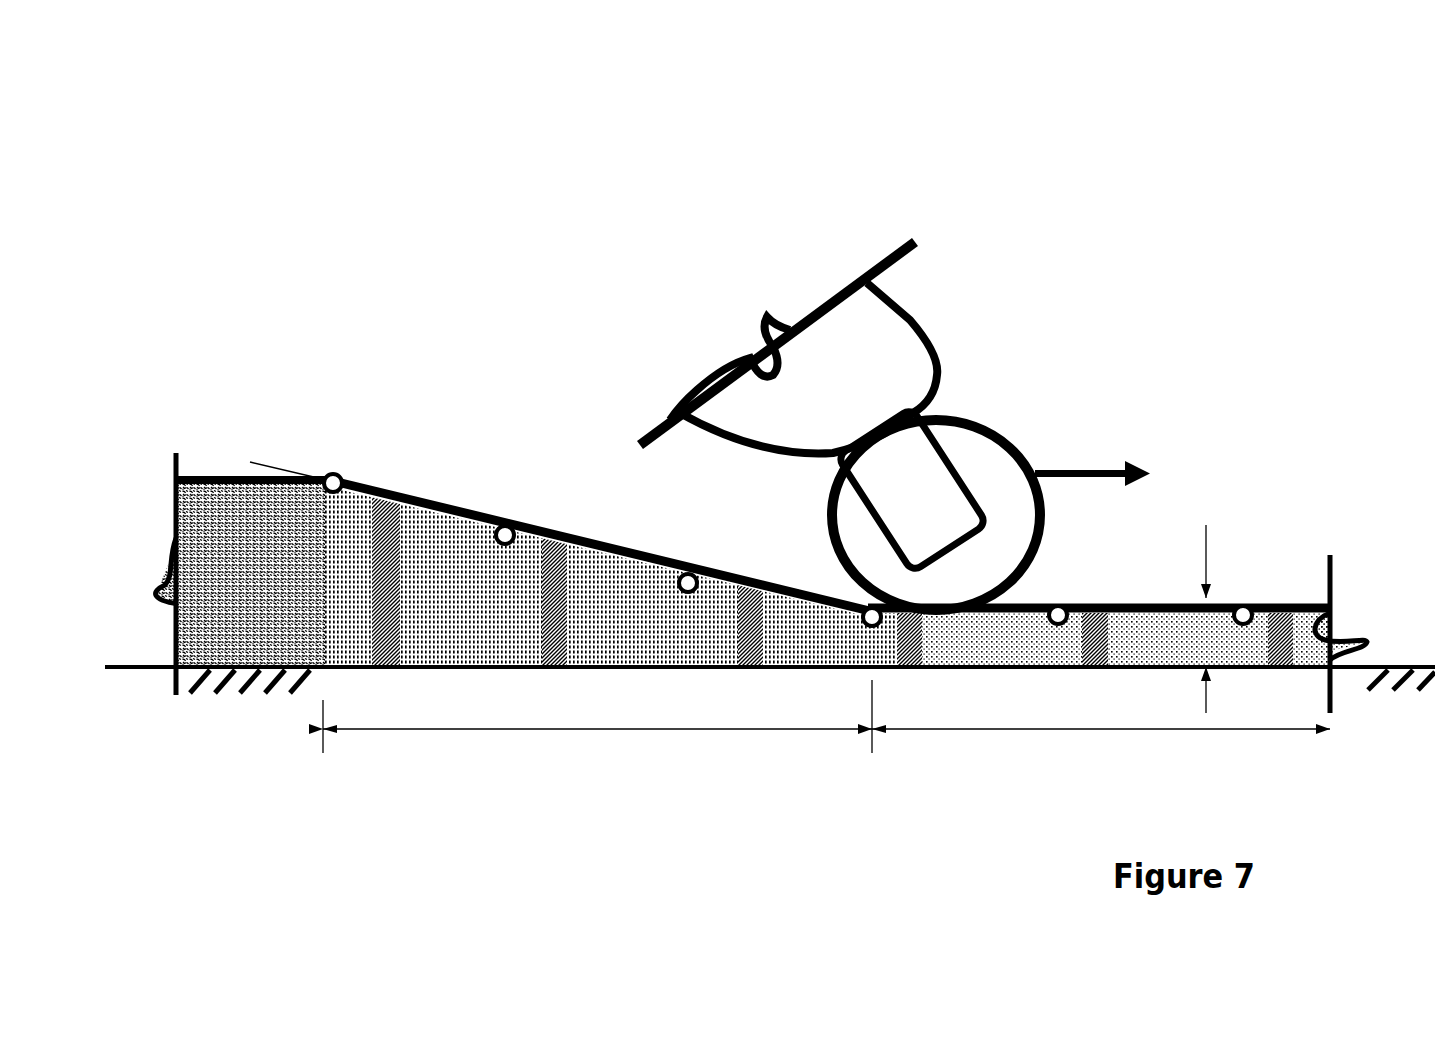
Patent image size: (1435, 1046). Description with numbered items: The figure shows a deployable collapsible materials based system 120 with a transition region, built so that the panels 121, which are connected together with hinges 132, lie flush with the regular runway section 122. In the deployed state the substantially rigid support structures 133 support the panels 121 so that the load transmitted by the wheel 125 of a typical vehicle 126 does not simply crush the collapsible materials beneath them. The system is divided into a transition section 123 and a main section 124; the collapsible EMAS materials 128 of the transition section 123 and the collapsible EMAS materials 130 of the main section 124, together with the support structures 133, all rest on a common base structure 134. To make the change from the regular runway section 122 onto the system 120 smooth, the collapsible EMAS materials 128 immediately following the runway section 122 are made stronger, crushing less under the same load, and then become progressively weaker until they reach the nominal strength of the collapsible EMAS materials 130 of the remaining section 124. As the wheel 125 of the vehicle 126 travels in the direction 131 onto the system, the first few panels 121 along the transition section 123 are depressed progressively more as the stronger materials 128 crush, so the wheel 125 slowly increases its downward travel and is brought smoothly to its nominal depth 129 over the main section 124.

The collapsible materials based system 120 is at (1205, 130).
The panels 121 is at (445, 498).
The regular runway section 122 is at (223, 462).
The transition section 123 is at (597, 725).
The main section 124 is at (1101, 746).
The wheel 125 is at (990, 433).
The vehicle 126 is at (910, 313).
The collapsible EMAS materials 128 is at (445, 565).
The nominal depth 129 is at (1231, 610).
The collapsible EMAS materials 130 is at (1007, 643).
The direction 131 is at (1092, 455).
The hinges 132 is at (520, 508).
The substantially rigid support structures 133 is at (540, 623).
The base structure 134 is at (1407, 662).